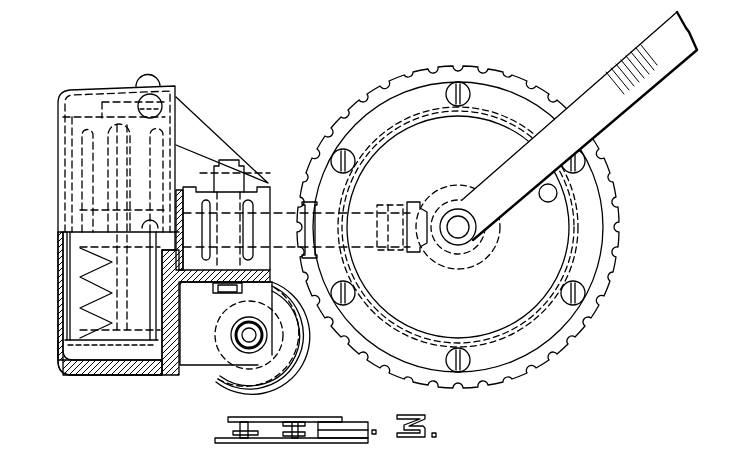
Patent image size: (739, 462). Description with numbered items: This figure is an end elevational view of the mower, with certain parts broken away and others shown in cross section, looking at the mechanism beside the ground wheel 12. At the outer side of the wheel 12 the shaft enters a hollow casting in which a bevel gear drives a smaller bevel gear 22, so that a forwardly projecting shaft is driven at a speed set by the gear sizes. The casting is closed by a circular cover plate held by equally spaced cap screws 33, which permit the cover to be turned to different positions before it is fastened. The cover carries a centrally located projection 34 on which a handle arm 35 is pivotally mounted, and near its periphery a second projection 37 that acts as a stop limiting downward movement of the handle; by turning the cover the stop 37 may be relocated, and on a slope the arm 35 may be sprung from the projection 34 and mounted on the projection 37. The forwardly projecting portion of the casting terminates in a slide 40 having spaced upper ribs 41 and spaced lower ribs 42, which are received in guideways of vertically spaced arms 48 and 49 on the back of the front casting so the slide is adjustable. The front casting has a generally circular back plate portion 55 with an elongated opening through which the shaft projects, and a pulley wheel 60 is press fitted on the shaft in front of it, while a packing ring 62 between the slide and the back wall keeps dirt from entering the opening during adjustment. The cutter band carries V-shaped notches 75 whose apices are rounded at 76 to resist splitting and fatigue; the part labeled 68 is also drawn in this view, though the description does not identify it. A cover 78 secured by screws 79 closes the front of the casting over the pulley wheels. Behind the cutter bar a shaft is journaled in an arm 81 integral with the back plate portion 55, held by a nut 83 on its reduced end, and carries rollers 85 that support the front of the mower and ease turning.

The wheel 12 is at (608, 273).
The smaller bevel gear 22 is at (425, 262).
The cap screws 33 is at (462, 85).
The centrally located projection 34 is at (462, 246).
The handle arm 35 is at (643, 55).
The second projection 37 is at (558, 190).
The slide 40 is at (270, 203).
The spaced upper ribs 41 is at (216, 190).
The spaced lower ribs 42 is at (187, 372).
The arm 48 is at (253, 161).
The arm 49 is at (237, 293).
The back plate portion 55 is at (157, 372).
The pulley wheel 60 is at (58, 281).
The packing ring 62 is at (187, 187).
The housing corner 68 is at (67, 375).
The V-shaped notches 75 is at (78, 322).
The rounded apex 76 is at (100, 354).
The cover 78 is at (506, 222).
The screws 79 is at (150, 76).
The arm 81 is at (297, 352).
The nut 83 is at (258, 354).
The rollers 85 is at (232, 380).